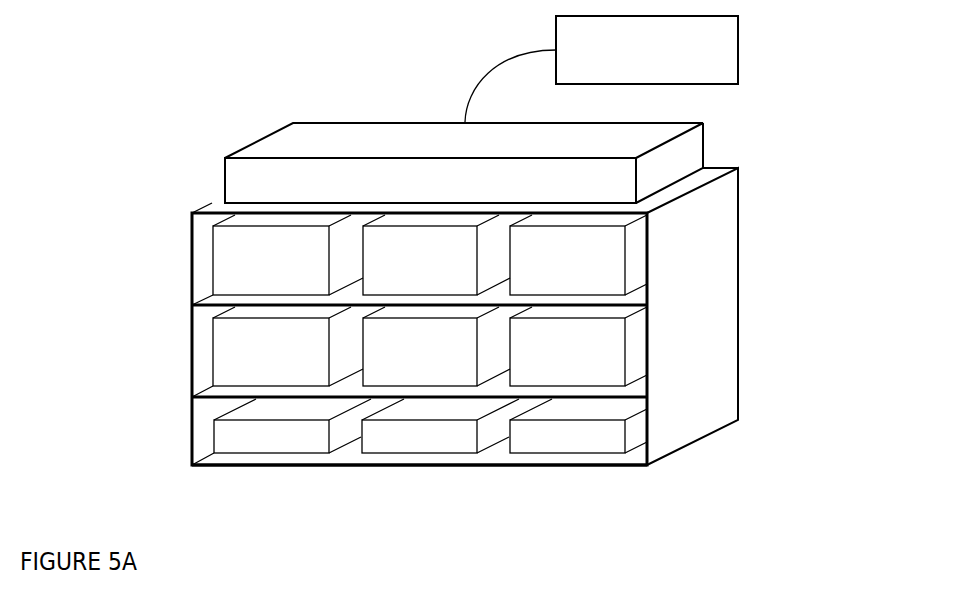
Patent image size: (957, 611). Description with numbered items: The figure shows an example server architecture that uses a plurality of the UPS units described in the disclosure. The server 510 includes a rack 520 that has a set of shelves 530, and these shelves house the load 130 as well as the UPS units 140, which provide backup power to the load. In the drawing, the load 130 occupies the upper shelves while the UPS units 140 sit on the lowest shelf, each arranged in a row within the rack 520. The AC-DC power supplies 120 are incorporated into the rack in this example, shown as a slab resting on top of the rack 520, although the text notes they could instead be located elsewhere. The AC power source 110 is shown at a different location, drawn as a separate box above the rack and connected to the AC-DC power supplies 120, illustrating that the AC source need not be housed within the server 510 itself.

The AC power source 110 is at (740, 63).
The AC-DC power supplies 120 is at (225, 183).
The load 130 is at (213, 249).
The UPS units 140 is at (214, 443).
The server 510 is at (429, 363).
The rack 520 is at (192, 297).
The shelves 530 is at (650, 308).